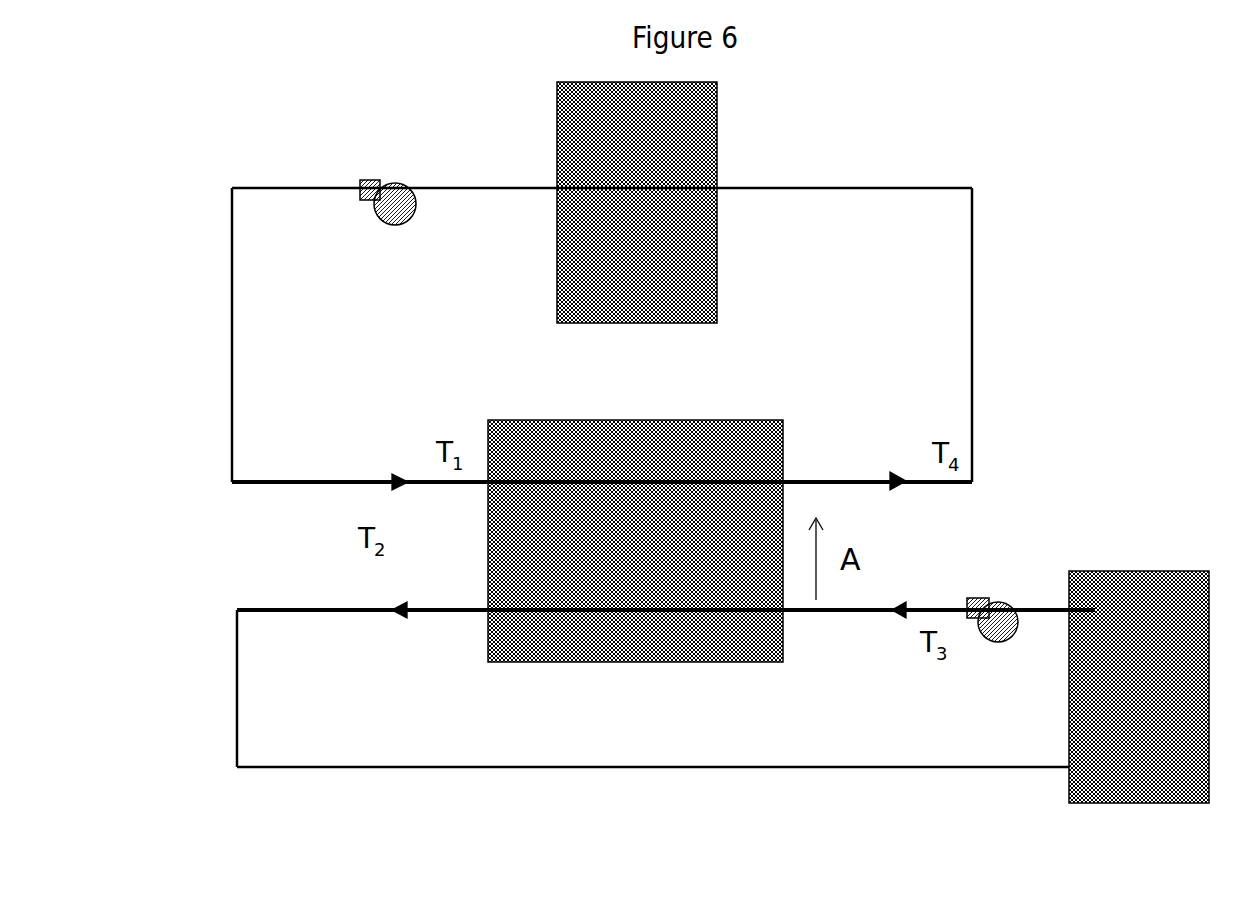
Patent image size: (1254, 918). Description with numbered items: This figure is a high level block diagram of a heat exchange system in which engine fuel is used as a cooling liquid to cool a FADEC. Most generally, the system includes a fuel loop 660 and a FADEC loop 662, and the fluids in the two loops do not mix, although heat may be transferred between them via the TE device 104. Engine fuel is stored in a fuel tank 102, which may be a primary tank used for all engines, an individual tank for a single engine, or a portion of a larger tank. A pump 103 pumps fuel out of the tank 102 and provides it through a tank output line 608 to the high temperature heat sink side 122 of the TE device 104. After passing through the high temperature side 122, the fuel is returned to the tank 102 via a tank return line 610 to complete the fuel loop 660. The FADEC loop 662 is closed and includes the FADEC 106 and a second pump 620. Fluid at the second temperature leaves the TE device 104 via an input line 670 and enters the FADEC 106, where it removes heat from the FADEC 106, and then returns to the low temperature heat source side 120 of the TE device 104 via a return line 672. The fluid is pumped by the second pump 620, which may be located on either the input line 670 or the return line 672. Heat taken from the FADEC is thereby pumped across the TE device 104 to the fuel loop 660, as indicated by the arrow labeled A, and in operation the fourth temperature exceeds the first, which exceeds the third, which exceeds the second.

The fuel tank 102 is at (718, 135).
The pump 103 is at (393, 181).
The TE device 104 is at (611, 558).
The FADEC 106 is at (1142, 568).
The low temperature heat source side 120 is at (567, 640).
The high temperature heat sink side 122 is at (568, 455).
The tank output line 608 is at (230, 340).
The tank return line 610 is at (975, 298).
The second pump 620 is at (997, 598).
The fuel loop 660 is at (1035, 322).
The FADEC loop 662 is at (204, 690).
The input line 670 is at (405, 768).
The return line 672 is at (795, 612).